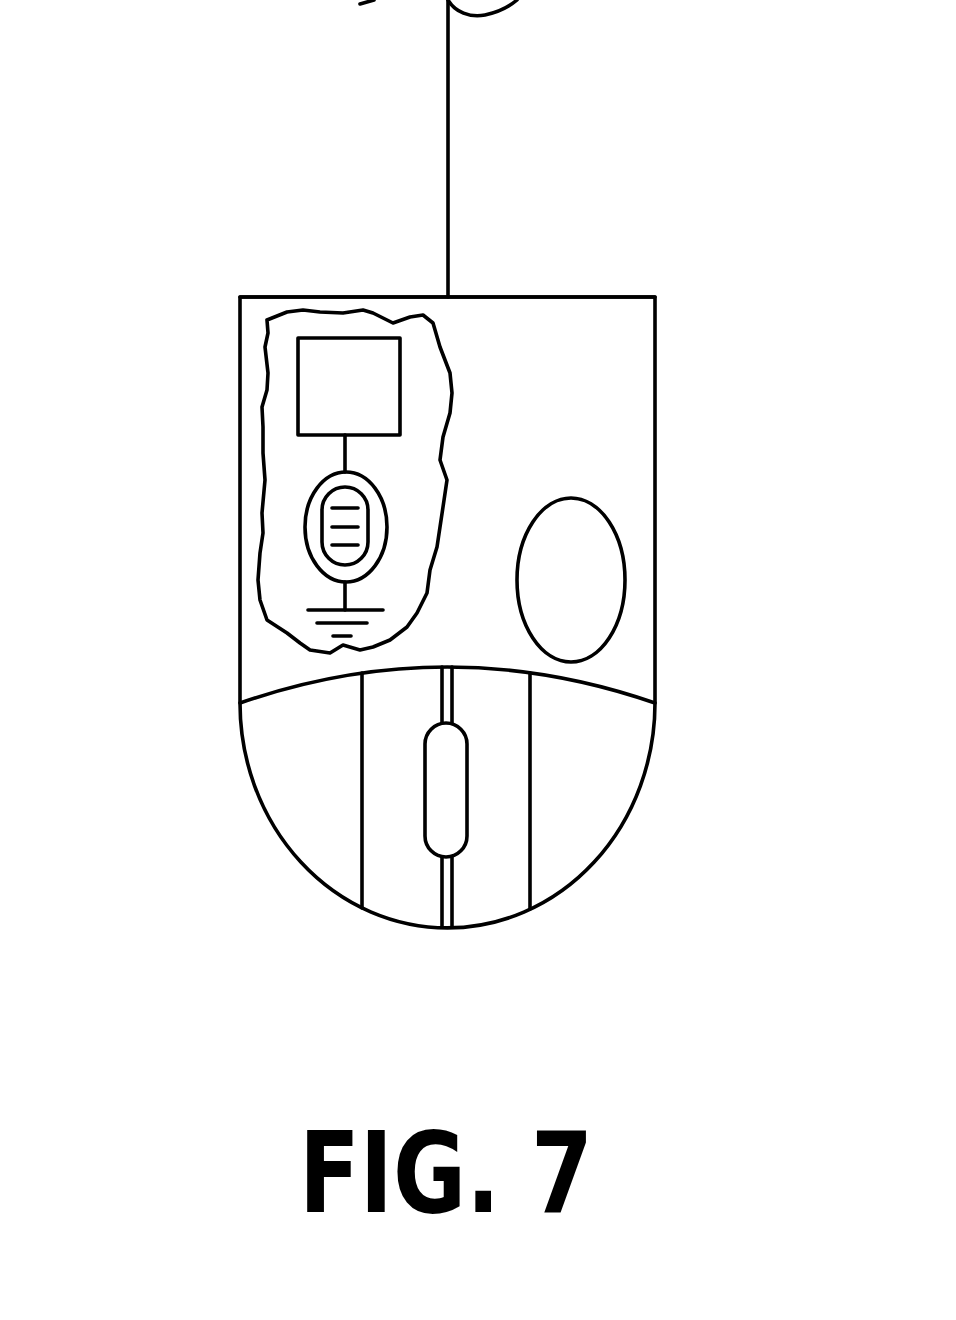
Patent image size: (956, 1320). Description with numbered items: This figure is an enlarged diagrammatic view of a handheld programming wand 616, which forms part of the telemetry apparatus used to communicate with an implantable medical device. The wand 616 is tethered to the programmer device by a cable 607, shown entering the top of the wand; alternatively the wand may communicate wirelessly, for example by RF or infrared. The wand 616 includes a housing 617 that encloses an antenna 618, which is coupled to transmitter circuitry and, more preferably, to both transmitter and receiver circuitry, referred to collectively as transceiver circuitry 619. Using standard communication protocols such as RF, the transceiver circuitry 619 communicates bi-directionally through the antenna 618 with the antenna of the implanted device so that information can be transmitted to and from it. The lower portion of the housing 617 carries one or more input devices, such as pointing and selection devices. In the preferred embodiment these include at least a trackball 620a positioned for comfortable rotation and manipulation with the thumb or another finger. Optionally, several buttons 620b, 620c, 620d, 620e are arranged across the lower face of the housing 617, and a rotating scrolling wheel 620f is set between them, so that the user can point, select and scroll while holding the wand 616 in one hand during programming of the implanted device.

The cable 607 is at (448, 125).
The programming wand 616 is at (250, 268).
The housing 617 is at (607, 297).
The antenna 618 is at (307, 523).
The transceiver circuitry 619 is at (298, 405).
The trackball 620a is at (600, 508).
The button 620b is at (570, 822).
The button 620c is at (340, 838).
The button 620d is at (411, 898).
The button 620e is at (507, 738).
The rotating scrolling wheel 620f is at (447, 833).